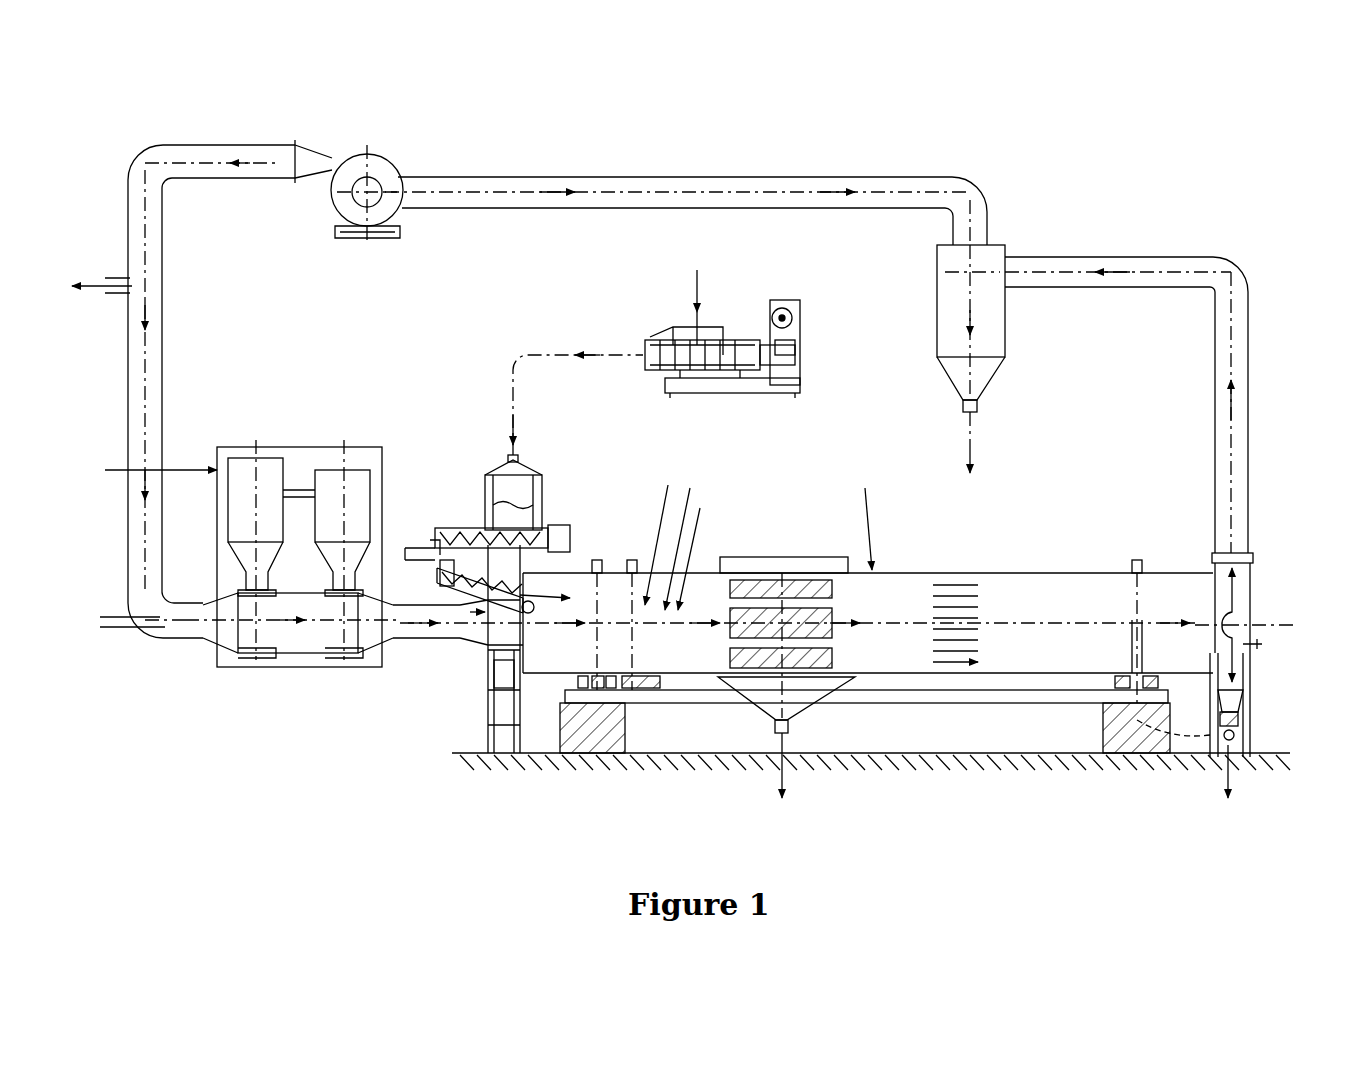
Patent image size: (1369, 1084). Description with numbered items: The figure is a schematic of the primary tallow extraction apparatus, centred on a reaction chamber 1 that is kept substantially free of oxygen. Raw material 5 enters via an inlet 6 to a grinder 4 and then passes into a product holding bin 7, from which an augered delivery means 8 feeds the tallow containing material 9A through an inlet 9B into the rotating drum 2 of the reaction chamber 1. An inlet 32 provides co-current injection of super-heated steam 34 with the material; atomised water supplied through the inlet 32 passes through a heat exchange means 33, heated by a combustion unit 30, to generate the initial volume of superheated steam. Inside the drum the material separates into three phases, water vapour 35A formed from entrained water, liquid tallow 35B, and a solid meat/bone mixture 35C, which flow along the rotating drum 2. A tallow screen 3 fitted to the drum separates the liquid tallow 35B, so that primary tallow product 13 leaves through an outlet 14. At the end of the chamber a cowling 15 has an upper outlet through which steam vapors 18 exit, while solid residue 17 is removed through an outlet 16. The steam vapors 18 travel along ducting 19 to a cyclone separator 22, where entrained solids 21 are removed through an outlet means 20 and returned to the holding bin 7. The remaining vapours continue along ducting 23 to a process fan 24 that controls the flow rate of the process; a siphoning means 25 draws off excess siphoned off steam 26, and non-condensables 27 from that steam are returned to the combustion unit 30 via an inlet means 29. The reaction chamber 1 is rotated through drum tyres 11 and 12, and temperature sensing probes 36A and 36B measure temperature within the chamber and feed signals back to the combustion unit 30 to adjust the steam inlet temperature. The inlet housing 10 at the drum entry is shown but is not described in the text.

The reaction chamber 1 is at (861, 511).
The rotating drum 2 is at (908, 573).
The tallow screen 3 is at (785, 585).
The grinder 4 is at (735, 393).
The raw material 5 is at (696, 294).
The inlet 6 is at (690, 327).
The product holding bin 7 is at (545, 490).
The augered delivery means 8 is at (458, 530).
The tallow containing material 9A is at (535, 598).
The inlet 9B is at (535, 600).
The inlet housing 10 is at (512, 622).
The drum tyre 11 is at (600, 560).
The drum tyre 12 is at (1133, 560).
The primary tallow product 13 is at (782, 780).
The outlet 14 is at (787, 735).
The cowling 15 is at (1225, 620).
The outlet 16 is at (1228, 742).
The solid residue 17 is at (1232, 784).
The steam vapors 18 is at (1245, 560).
The ducting 19 is at (1238, 268).
The outlet means 20 is at (977, 405).
The solids 21 is at (970, 458).
The cyclone separator 22 is at (1007, 328).
The ducting 23 is at (610, 178).
The process fan 24 is at (393, 157).
The siphoning means 25 is at (130, 283).
The siphoned off steam 26 is at (82, 299).
The non-condensables 27 is at (146, 471).
The inlet means 29 is at (222, 462).
The combustion unit 30 is at (283, 455).
The inlet 32 is at (125, 633).
The heat exchange means 33 is at (297, 633).
The super-heated steam 34 is at (408, 640).
The water vapour 35A is at (656, 533).
The liquid tallow 35B is at (692, 536).
The solid meat/bone mixture 35C is at (706, 546).
The temperature sensing probe 36A is at (485, 605).
The temperature sensing probe 36B is at (1255, 650).